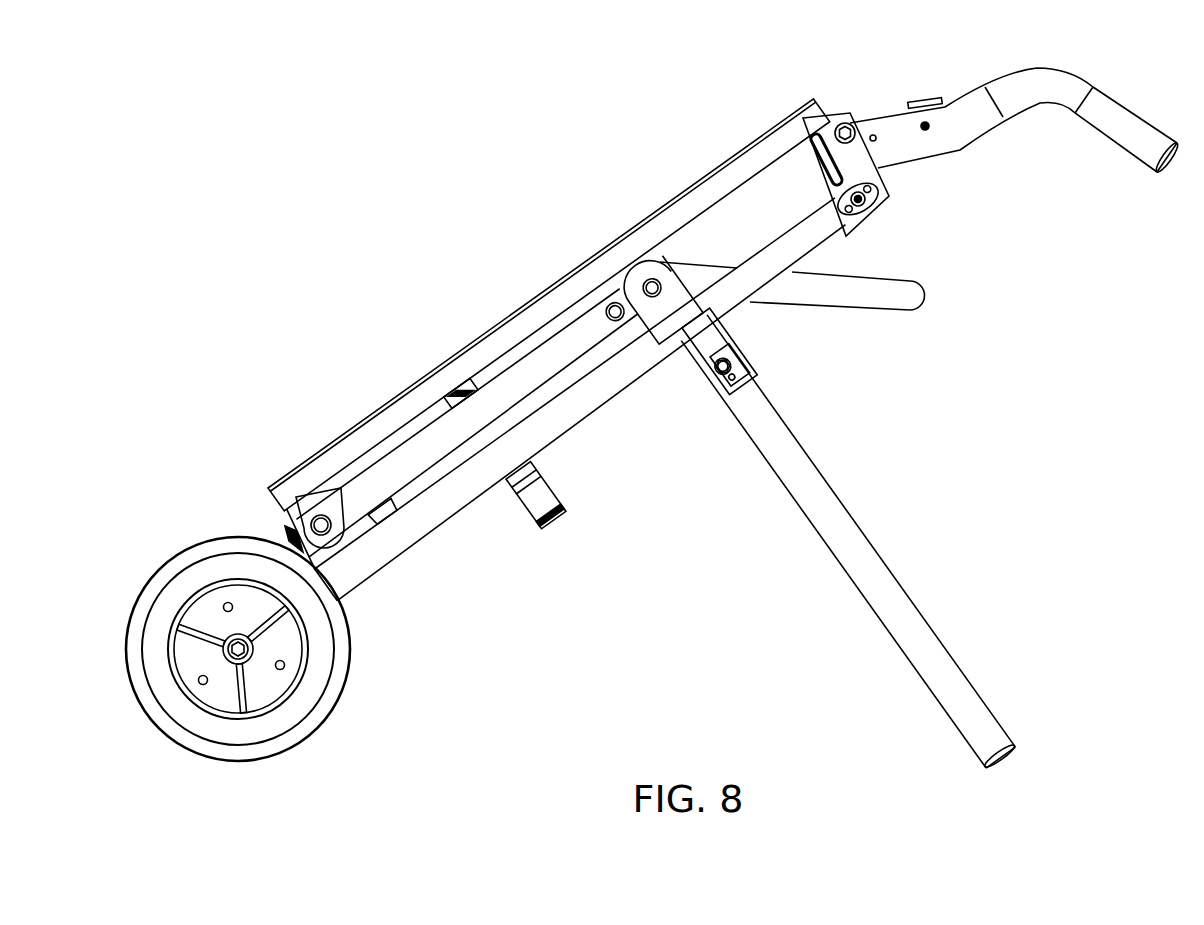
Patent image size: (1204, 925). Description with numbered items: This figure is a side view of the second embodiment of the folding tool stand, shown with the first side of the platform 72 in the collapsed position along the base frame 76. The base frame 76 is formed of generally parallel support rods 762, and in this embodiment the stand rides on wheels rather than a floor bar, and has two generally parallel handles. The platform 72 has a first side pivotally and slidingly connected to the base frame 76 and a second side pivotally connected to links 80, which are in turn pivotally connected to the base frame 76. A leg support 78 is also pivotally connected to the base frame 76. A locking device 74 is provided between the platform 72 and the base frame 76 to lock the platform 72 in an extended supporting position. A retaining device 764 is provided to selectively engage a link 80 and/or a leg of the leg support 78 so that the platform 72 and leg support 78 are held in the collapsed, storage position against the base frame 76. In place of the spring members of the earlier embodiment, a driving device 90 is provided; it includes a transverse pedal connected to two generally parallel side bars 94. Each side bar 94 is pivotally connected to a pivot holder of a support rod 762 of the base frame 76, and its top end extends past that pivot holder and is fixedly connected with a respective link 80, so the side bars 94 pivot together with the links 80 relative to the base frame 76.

The platform 72 is at (527, 297).
The locking device 74 is at (878, 112).
The base frame 76 is at (450, 532).
The leg support 78 is at (850, 560).
The link 80 is at (557, 355).
The driving device 90 is at (859, 333).
The side bar 94 is at (835, 285).
The support rod 762 is at (916, 158).
The retaining device 764 is at (585, 523).